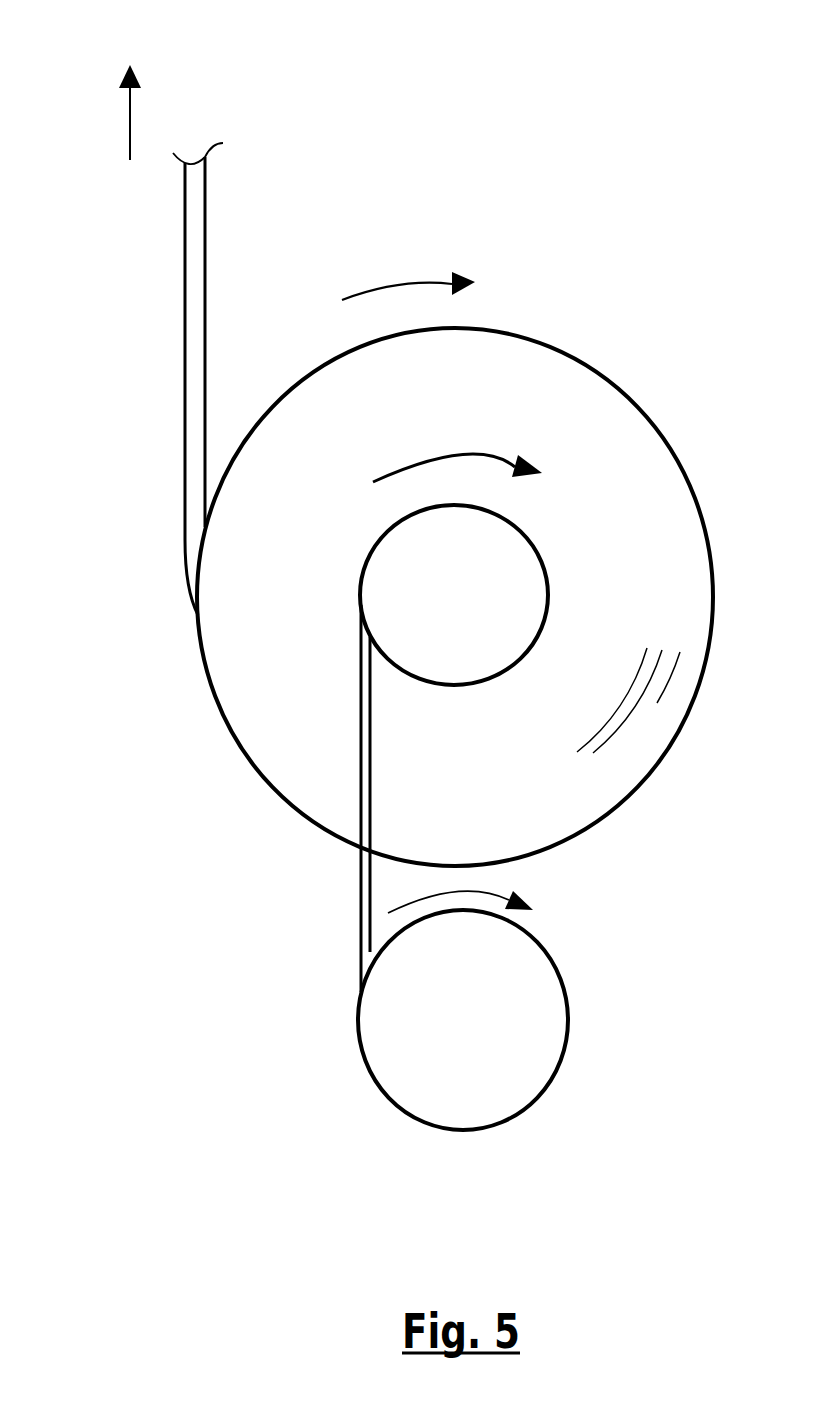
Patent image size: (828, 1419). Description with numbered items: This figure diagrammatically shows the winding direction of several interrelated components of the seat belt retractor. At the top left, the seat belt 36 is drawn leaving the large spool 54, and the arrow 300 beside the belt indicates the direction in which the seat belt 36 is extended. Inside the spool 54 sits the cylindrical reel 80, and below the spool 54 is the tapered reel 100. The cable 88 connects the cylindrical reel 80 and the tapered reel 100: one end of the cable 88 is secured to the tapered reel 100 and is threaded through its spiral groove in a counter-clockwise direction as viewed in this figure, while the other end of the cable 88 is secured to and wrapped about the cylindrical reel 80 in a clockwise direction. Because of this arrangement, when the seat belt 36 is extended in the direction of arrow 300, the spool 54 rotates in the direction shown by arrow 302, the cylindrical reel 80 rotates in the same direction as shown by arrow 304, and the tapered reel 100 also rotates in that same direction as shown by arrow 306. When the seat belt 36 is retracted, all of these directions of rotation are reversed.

The seat belt 36 is at (185, 237).
The spool 54 is at (652, 378).
The cylindrical reel 80 is at (507, 568).
The cable 88 is at (358, 895).
The tapered reel 100 is at (522, 1000).
The arrow indicating seat belt extension 300 is at (130, 84).
The arrow indicating spool rotation direction 302 is at (372, 270).
The arrow indicating cylindrical reel rotation direction 304 is at (413, 453).
The arrow indicating tapered reel rotation direction 306 is at (507, 886).